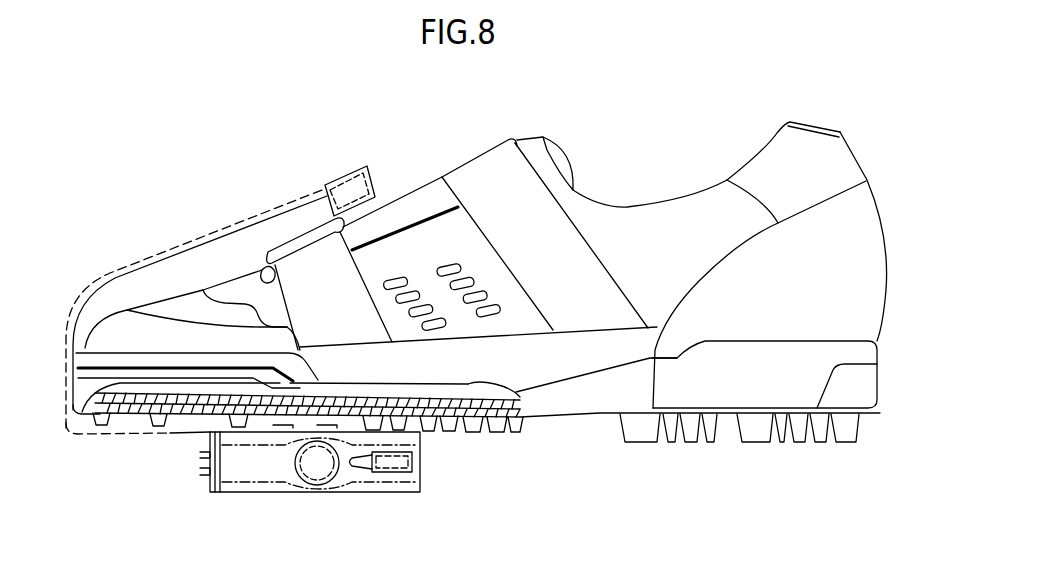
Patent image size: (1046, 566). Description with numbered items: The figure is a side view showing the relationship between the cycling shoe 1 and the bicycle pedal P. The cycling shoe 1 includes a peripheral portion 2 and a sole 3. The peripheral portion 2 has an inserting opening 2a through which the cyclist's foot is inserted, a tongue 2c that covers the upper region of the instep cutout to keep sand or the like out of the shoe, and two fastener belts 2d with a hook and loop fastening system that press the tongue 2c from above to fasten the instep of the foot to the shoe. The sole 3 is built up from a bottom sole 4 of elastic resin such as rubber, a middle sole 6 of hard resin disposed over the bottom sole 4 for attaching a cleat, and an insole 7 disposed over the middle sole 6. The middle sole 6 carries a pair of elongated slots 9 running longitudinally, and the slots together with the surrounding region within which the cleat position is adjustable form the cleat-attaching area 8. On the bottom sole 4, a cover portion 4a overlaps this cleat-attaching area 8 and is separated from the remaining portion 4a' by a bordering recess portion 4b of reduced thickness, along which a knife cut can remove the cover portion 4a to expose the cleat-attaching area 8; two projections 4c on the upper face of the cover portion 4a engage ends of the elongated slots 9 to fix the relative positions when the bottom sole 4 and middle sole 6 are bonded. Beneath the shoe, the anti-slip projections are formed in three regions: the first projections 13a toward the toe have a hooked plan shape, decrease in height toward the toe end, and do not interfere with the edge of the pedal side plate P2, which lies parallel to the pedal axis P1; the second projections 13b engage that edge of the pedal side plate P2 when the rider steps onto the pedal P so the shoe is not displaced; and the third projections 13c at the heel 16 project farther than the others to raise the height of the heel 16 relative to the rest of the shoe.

The cycling shoe 1 is at (377, 150).
The peripheral portion 2 is at (231, 273).
The inserting opening 2a is at (646, 180).
The tongue 2c is at (430, 187).
The fastener belts 2d is at (303, 233).
The sole 3 is at (137, 434).
The bottom sole 4 is at (110, 427).
The cover portion 4a is at (483, 421).
The remaining portion 4a' is at (181, 442).
The bordering recess portion 4b is at (472, 433).
The projections 4c is at (323, 397).
The middle sole 6 is at (497, 398).
The insole 7 is at (157, 397).
The cleat-attaching area 8 is at (403, 398).
The elongated slots 9 is at (345, 398).
The first projections 13a is at (259, 430).
The second projections 13b is at (520, 434).
The third projections 13c is at (718, 433).
The heel 16 is at (813, 417).
The pedal P is at (233, 500).
The pedal axis P1 is at (337, 483).
The pedal side plate P2 is at (423, 474).